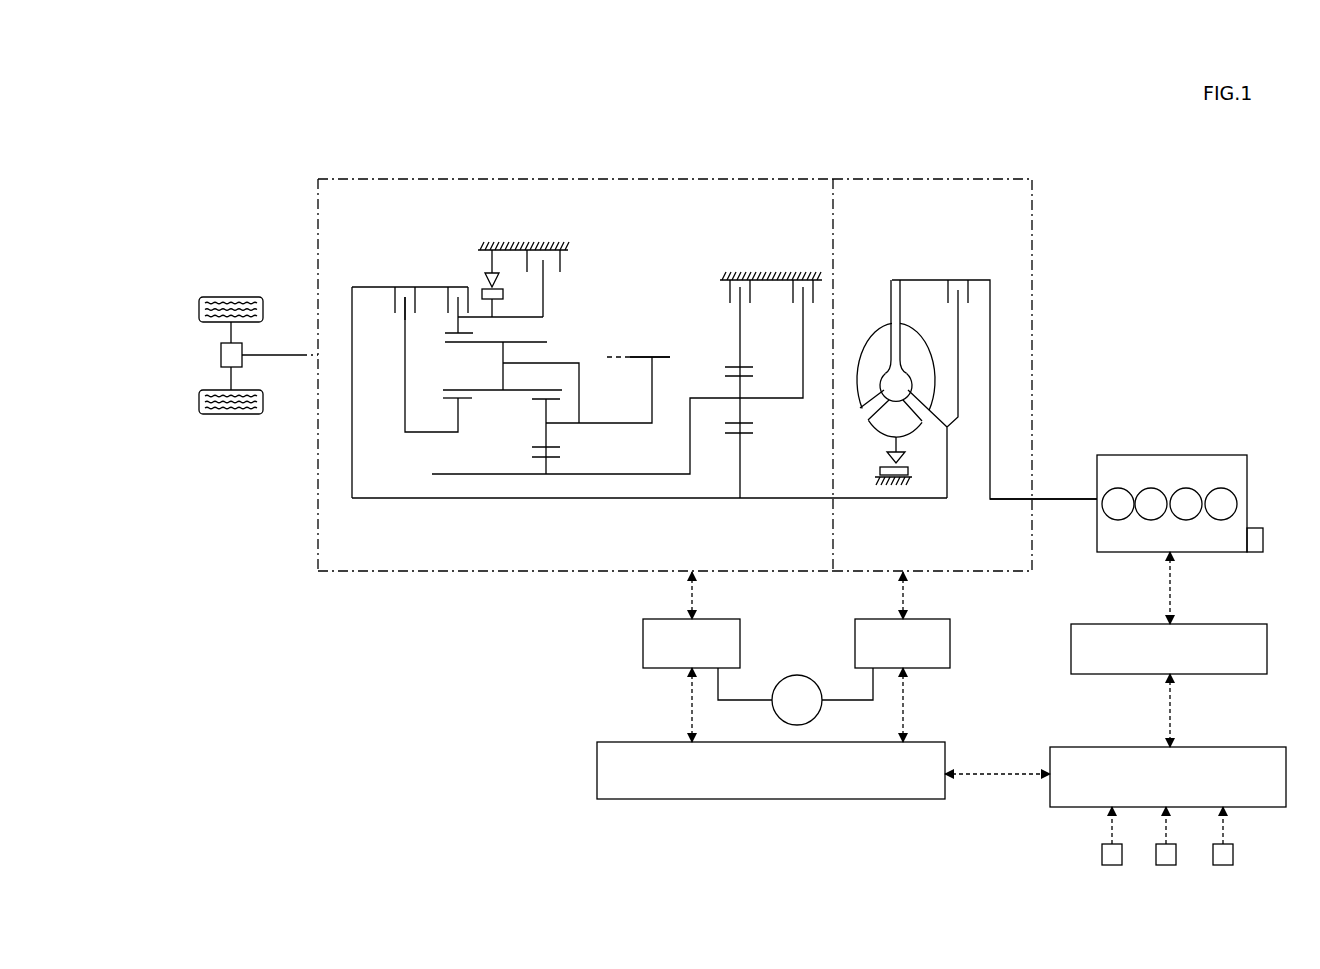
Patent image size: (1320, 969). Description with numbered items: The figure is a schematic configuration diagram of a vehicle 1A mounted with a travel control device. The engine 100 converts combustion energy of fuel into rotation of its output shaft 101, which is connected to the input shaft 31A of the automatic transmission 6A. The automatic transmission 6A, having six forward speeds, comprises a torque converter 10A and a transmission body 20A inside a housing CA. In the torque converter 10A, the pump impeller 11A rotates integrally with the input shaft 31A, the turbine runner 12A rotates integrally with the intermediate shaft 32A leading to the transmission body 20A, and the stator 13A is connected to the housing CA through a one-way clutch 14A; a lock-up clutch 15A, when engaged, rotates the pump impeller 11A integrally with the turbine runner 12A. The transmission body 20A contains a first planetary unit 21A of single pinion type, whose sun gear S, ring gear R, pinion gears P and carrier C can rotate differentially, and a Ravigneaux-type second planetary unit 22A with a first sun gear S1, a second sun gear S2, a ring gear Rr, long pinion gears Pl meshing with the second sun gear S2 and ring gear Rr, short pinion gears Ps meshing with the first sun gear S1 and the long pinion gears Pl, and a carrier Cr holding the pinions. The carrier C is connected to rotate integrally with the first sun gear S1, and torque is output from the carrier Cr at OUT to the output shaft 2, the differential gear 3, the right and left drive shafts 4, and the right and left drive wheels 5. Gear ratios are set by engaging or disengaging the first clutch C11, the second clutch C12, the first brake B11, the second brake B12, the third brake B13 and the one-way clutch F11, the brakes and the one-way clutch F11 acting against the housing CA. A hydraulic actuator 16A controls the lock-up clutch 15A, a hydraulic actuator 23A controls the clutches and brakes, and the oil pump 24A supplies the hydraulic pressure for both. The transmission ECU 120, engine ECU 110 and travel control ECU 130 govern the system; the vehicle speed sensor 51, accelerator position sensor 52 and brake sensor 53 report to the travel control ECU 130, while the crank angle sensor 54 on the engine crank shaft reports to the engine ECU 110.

The vehicle 1A is at (925, 146).
The automatic transmission 6A is at (396, 150).
The transmission body 20A is at (796, 178).
The torque converter 10A is at (999, 178).
The lock-up clutch 15A is at (954, 264).
The pump impeller 11A is at (864, 334).
The turbine runner 12A is at (922, 334).
The stator 13A is at (866, 434).
The one-way clutch 14A is at (907, 490).
The housing CA is at (570, 246).
The one-way clutch F11 is at (482, 266).
The first clutch C11 is at (398, 266).
The second clutch C12 is at (451, 266).
The second brake B12 is at (582, 348).
The third brake B13 is at (718, 296).
The first brake B11 is at (813, 312).
The ring gear Rr is at (451, 337).
The long pinion gears Pl is at (502, 374).
The carrier Cr is at (622, 424).
The output shaft OUT is at (650, 343).
The second sun gear S2 is at (465, 406).
The short pinion gears Ps is at (545, 426).
The first sun gear S1 is at (560, 457).
The ring gear R is at (725, 364).
The carrier C is at (775, 396).
The pinion gears P is at (745, 412).
The sun gear S is at (750, 436).
The output shaft 2 is at (288, 360).
The differential gear 3 is at (218, 356).
The drive shafts 4 is at (220, 332).
The drive wheels 5 is at (195, 309).
The second planetary unit 22A is at (517, 517).
The first planetary unit 21A is at (751, 517).
The intermediate shaft 32A is at (688, 501).
The input shaft 31A is at (1000, 501).
The output shaft 101 is at (1058, 498).
The engine 100 is at (1216, 454).
The crank angle sensor 54 is at (1256, 528).
The engine ECU 110 is at (1235, 622).
The travel control ECU 130 is at (1253, 745).
The transmission ECU 120 is at (892, 801).
The hydraulic actuator 23A is at (723, 619).
The hydraulic actuator 16A is at (935, 619).
The oil pump 24A is at (800, 676).
The vehicle speed sensor 51 is at (1233, 853).
The accelerator position sensor 52 is at (1176, 844).
The brake sensor 53 is at (1102, 854).